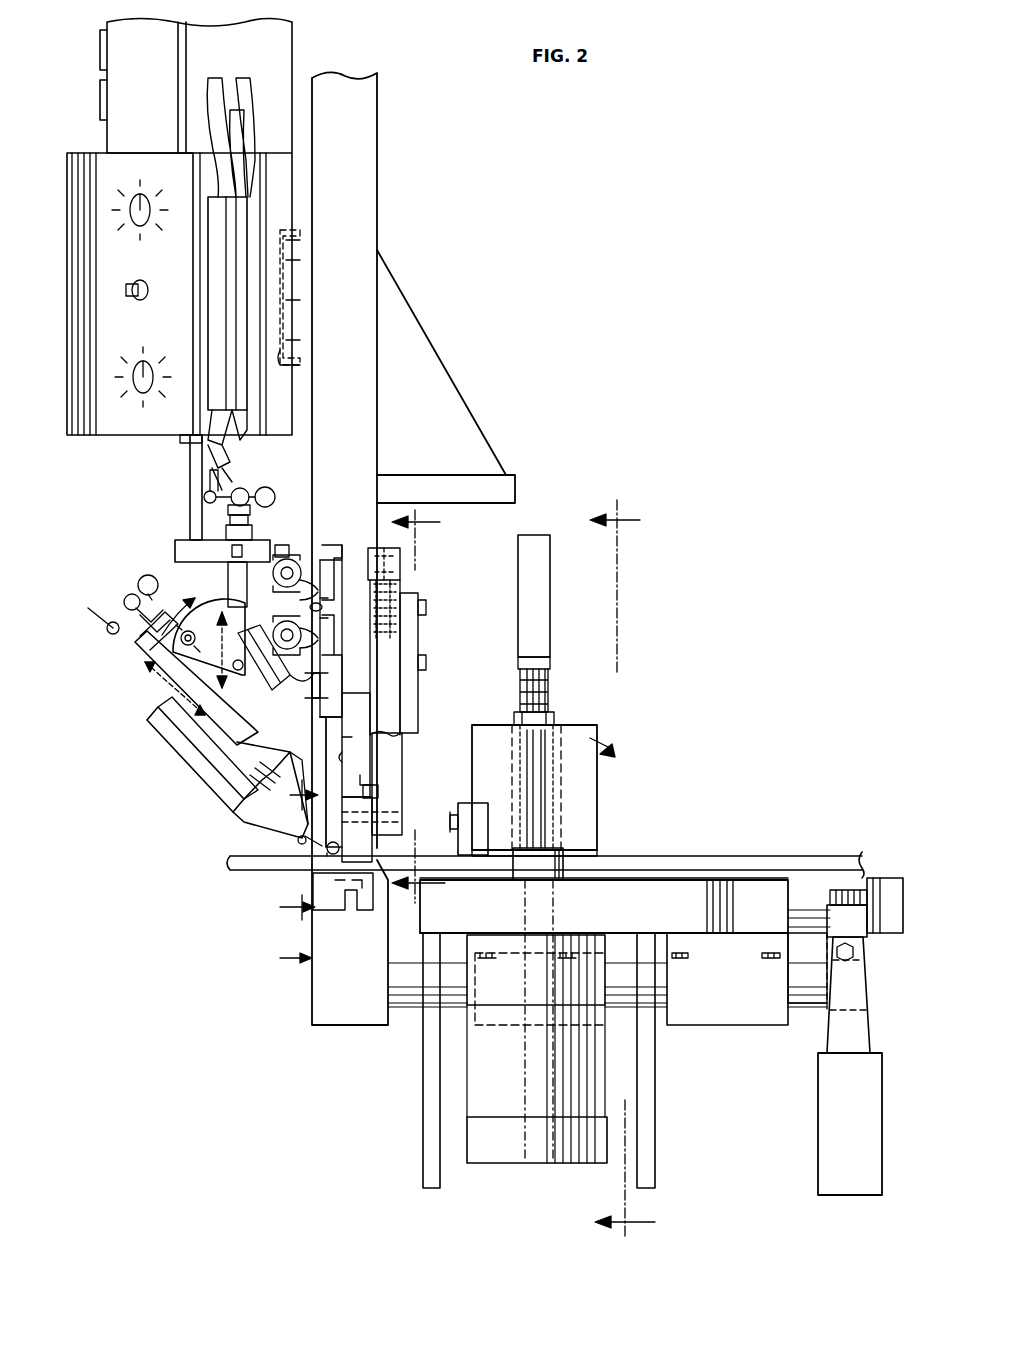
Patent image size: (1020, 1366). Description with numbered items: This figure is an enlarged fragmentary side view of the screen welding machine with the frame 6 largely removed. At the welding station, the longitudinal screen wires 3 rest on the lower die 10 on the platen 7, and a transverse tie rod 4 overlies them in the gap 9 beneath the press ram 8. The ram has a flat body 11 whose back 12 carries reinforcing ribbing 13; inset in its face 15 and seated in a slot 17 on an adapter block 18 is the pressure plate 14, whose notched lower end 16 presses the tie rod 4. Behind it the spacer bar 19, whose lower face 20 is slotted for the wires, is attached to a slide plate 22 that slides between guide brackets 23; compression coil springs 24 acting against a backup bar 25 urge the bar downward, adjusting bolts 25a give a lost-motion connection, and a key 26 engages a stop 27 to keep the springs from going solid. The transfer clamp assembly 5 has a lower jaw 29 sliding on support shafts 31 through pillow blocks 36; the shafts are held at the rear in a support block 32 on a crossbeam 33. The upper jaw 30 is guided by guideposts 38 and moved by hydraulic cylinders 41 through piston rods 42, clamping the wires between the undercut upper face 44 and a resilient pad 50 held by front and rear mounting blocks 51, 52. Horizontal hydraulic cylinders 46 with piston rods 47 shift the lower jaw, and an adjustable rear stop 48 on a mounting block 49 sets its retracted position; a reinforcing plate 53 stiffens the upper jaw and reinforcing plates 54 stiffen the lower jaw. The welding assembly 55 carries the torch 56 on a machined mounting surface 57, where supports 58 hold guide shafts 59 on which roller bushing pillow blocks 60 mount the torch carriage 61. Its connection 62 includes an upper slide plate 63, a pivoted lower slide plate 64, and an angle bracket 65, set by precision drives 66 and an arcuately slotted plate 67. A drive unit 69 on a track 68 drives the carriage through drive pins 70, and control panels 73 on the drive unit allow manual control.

The longitudinal wires 3 is at (227, 867).
The transverse rods 4 is at (330, 858).
The transfer clamp assembly 5 is at (611, 872).
The frame 6 is at (396, 522).
The platen 7 is at (307, 872).
The press ram 8 is at (377, 172).
The gap 9 is at (297, 839).
The lower die 10 is at (313, 890).
The body 11 is at (350, 353).
The back 12 is at (378, 243).
The reinforcing ribbing 13 is at (480, 425).
The pressure plate 14 is at (323, 748).
The face 15 is at (315, 465).
The lower end 16 is at (326, 849).
The slot 17 is at (353, 753).
The adapter block 18 is at (363, 746).
The spacer bar 19 is at (372, 851).
The lower face 20 is at (363, 880).
The slide plate 22 is at (402, 805).
The guide brackets 23 is at (420, 638).
The compression coil springs 24 is at (396, 590).
The backup bar 25 is at (400, 552).
The adjusting bolts 25a is at (384, 566).
The key 26 is at (380, 792).
The stop 27 is at (370, 783).
The lower jaw 29 is at (692, 913).
The upper jaw 30 is at (598, 792).
The support shafts 31 is at (815, 985).
The support block 32 is at (857, 1000).
The crossbeam 33 is at (895, 1055).
The pillow blocks 36 is at (538, 1028).
The guideposts 38 is at (538, 1004).
The hydraulic cylinders 41 is at (536, 1100).
The piston rods 42 is at (552, 680).
The upper face 44 is at (478, 880).
The hydraulic cylinders 46 is at (880, 877).
The piston rods 47 is at (815, 888).
The rear stop 48 is at (795, 928).
The mounting block 49 is at (848, 915).
The resilient pad 50 is at (498, 845).
The front mounting block 51 is at (456, 842).
The rear mounting block 52 is at (570, 855).
The reinforcing plate 53 is at (550, 620).
The reinforcing plates 54 is at (423, 1118).
The welding assembly 55 is at (160, 738).
The torch 56 is at (190, 767).
The mounting surface 57 is at (322, 607).
The supports 58 is at (318, 585).
The guide shafts 59 is at (288, 558).
The roller bushing pillow blocks 60 is at (300, 568).
The torch carriage 61 is at (252, 538).
The connection 62 is at (137, 648).
The upper slide plate 63 is at (227, 581).
The lower slide plate 64 is at (170, 680).
The angle bracket 65 is at (286, 780).
The precision drives 66 is at (240, 488).
The arcuately slotted plate 67 is at (222, 658).
The track 68 is at (298, 228).
The drive unit 69 is at (300, 160).
The drive pins 70 is at (190, 468).
The control panels 73 is at (107, 135).